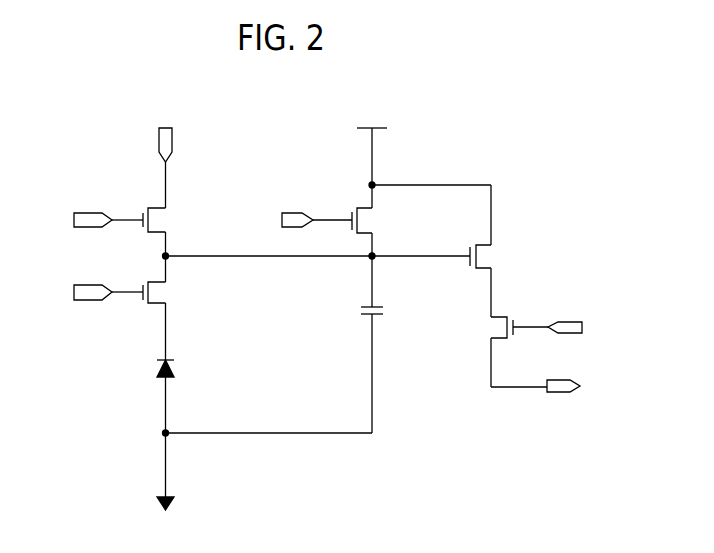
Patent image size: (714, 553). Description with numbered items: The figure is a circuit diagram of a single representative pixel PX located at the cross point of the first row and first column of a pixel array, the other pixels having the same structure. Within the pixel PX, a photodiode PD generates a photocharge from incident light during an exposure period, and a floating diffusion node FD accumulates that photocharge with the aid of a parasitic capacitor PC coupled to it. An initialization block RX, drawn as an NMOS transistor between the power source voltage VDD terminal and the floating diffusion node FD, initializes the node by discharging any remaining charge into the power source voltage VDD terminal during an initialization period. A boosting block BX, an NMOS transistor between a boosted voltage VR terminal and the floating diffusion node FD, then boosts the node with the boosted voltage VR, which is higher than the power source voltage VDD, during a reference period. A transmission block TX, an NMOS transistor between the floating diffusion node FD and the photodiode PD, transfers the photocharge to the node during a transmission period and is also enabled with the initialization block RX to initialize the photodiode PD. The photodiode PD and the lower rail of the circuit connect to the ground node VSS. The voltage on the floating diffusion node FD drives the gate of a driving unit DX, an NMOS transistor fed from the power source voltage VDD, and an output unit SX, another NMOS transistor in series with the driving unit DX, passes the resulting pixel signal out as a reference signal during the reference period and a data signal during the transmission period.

The pixel PX is at (78, 95).
The boosted voltage VR is at (166, 156).
The boosting block BX is at (147, 220).
The transmission block TX is at (148, 293).
The floating diffusion node FD is at (317, 267).
The photodiode PD is at (177, 370).
The ground voltage VSS is at (166, 515).
The power source voltage VDD is at (372, 157).
The initialization block RX is at (352, 220).
The parasitic capacitor PC is at (383, 311).
The driving unit DX is at (491, 257).
The output unit SX is at (510, 328).